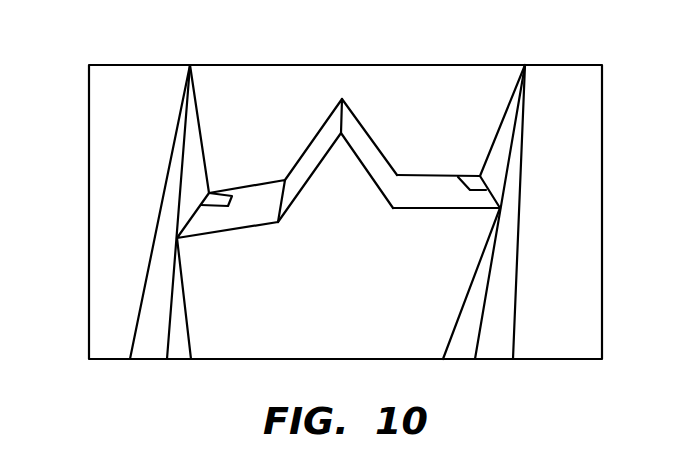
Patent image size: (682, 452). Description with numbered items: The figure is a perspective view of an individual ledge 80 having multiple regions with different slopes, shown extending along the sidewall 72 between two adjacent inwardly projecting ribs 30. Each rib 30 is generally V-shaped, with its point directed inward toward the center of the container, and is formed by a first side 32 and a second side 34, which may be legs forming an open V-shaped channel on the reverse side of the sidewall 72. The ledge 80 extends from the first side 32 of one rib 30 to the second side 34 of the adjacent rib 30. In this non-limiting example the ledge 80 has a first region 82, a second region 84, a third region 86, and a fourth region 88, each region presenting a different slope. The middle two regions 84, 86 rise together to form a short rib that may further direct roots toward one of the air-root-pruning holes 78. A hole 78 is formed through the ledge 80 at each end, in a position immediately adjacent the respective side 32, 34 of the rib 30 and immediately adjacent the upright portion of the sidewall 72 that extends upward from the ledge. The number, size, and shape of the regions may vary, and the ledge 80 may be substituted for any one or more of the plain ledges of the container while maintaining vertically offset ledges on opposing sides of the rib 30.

The rib 30 is at (303, 187).
The first side 32 is at (157, 263).
The second side 34 is at (195, 107).
The sidewall 72 is at (110, 208).
The hole 78 is at (220, 198).
The ledge 80 is at (338, 150).
The first region 82 is at (258, 200).
The second region 84 is at (325, 145).
The third region 86 is at (363, 147).
The fourth region 88 is at (440, 193).